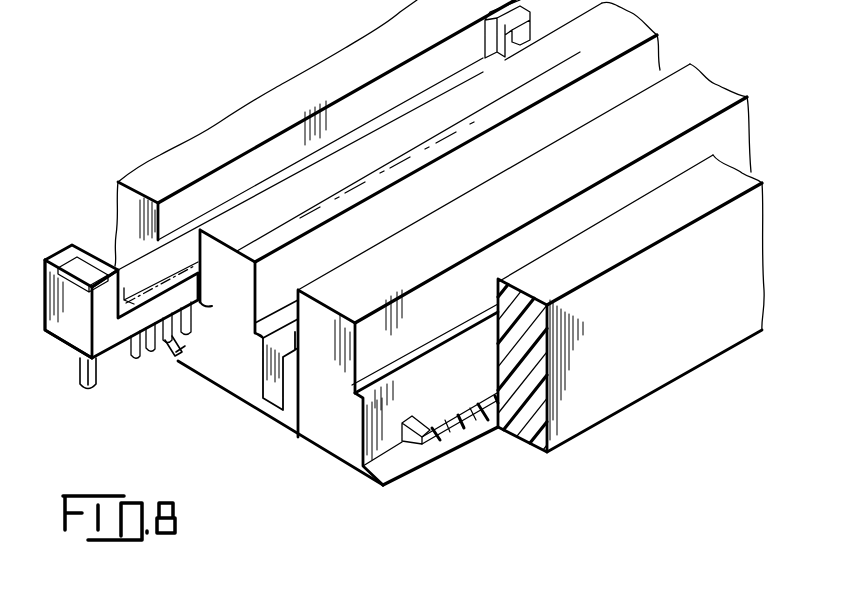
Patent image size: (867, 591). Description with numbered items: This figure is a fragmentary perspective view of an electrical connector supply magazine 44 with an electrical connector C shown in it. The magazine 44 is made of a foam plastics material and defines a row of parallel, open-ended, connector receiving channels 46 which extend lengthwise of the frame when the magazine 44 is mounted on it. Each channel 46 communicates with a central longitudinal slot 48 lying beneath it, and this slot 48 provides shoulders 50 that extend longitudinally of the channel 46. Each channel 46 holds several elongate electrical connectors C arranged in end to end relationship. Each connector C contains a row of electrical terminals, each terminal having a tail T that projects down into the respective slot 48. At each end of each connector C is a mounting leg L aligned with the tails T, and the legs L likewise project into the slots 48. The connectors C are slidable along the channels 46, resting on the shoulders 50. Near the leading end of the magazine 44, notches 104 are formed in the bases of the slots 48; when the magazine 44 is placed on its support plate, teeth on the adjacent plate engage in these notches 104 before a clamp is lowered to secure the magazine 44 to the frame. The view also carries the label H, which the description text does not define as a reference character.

The electrical connector supply magazine 44 is at (674, 380).
The connector receiving channel 46 is at (646, 63).
The central longitudinal slot 48 is at (182, 350).
The shoulder 50 is at (198, 304).
The notch 104 is at (403, 452).
The electrical connector C is at (73, 244).
The header H is at (66, 333).
The mounting leg L is at (90, 365).
The tail T is at (143, 353).